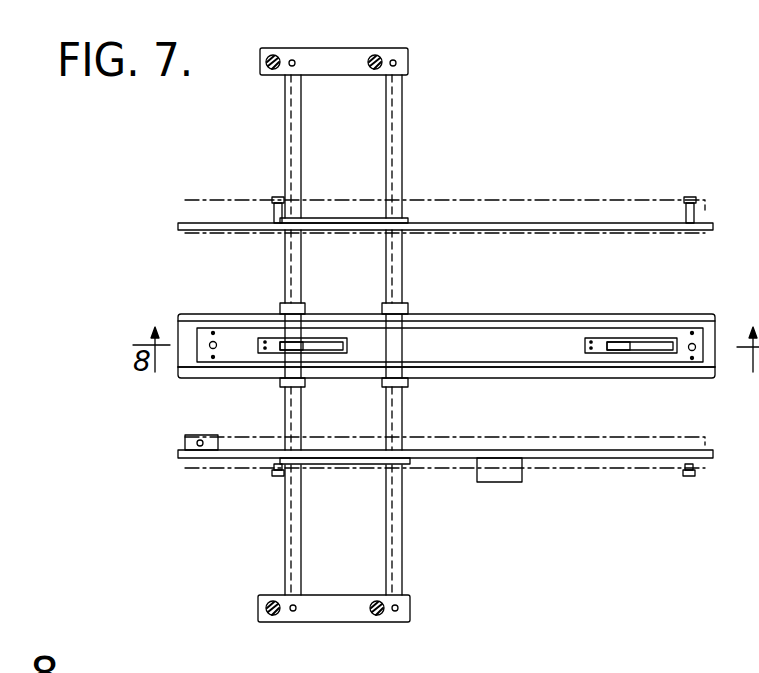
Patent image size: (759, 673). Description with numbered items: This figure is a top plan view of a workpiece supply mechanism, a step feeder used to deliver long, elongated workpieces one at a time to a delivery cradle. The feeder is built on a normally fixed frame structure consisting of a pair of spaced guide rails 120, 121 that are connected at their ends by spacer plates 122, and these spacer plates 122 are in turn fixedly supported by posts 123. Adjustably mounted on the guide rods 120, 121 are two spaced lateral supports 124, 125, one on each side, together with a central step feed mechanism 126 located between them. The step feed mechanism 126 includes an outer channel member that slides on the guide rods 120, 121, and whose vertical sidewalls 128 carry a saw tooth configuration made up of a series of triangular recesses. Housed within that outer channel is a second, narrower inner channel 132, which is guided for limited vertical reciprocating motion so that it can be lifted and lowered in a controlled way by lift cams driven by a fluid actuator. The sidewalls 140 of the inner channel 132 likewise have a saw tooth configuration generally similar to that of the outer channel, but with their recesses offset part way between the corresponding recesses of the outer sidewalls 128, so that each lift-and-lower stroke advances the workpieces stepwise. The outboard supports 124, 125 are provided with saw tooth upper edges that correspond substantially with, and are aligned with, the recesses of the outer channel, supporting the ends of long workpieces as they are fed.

The guide rail 120 is at (302, 147).
The guide rail 121 is at (405, 138).
The spacer plate 122 is at (337, 337).
The post 123 is at (272, 615).
The lateral support 124 is at (443, 225).
The lateral support 125 is at (575, 460).
The step feed mechanism 126 is at (461, 347).
The vertical sidewall 128 is at (683, 318).
The inner channel 132 is at (403, 359).
The sidewall 140 is at (493, 358).